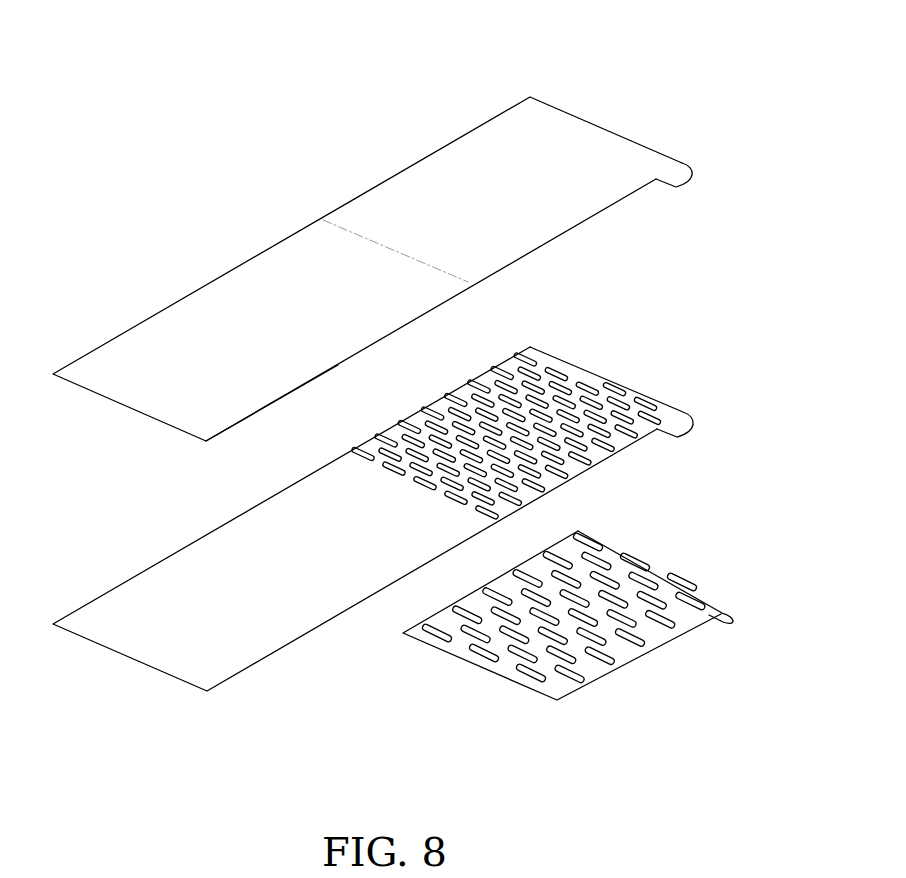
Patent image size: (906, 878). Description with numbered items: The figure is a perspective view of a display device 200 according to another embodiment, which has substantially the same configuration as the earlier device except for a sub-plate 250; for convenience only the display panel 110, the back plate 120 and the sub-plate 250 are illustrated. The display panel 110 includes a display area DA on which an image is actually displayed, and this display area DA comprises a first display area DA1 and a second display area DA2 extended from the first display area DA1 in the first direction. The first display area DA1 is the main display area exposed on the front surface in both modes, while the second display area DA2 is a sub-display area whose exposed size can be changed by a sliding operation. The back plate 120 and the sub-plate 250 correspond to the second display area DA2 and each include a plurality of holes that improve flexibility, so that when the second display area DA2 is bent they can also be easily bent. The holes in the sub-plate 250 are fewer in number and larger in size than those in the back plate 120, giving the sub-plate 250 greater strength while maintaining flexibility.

The display device 200 is at (768, 36).
The display panel 110 is at (372, 237).
The back plate 120 is at (676, 411).
The sub-plate 250 is at (714, 597).
The display area DA is at (367, 269).
The first display area DA1 is at (302, 238).
The second display area DA2 is at (358, 207).